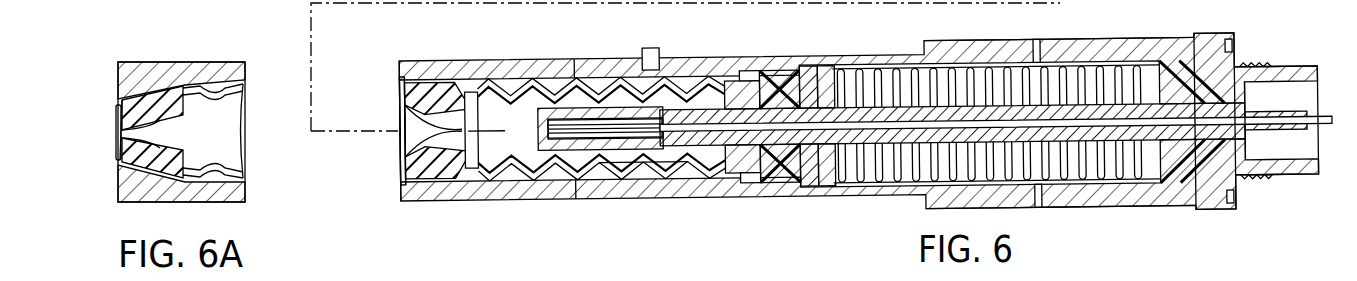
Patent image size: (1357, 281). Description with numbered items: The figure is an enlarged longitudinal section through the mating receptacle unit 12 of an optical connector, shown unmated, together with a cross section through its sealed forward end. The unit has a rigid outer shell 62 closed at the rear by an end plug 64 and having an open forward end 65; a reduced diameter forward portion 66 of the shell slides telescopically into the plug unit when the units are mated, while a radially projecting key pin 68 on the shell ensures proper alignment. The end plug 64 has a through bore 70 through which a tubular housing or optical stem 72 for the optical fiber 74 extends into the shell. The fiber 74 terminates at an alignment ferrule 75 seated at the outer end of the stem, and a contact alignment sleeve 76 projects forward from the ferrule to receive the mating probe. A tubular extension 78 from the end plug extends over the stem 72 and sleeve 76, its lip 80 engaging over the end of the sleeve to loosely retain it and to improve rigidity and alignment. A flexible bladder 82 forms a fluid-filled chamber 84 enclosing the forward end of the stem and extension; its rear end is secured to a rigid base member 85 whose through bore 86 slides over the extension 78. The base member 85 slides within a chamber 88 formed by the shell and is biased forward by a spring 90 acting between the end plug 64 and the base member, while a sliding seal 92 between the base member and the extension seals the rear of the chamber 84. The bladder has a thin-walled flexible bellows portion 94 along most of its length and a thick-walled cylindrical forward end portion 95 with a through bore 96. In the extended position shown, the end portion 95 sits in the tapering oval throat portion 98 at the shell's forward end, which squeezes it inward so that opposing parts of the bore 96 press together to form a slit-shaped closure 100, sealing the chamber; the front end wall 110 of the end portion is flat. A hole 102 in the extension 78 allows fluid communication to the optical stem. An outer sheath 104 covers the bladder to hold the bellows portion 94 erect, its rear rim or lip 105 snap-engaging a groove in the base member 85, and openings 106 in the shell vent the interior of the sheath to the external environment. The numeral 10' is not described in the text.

In FIG. 6A, the connector assembly 10' is at (181, 101).
In FIG. 6, the mating receptacle unit 12 is at (1112, 210).
In FIG. 6, the rigid outer shell 62 is at (1112, 54).
In FIG. 6, the rear end plug 64 is at (1207, 46).
In FIG. 6, the open forward end 65 is at (400, 63).
In FIG. 6A, the reduced diameter forward portion 66 is at (212, 68).
In FIG. 6, the reduced diameter forward portion 66 is at (842, 188).
In FIG. 6, the key pin 68 is at (661, 50).
In FIG. 6, the through bore 70 is at (1210, 102).
In FIG. 6, the tubular housing or optical stem 72 is at (1037, 137).
In FIG. 6, the optical fiber 74 is at (1322, 120).
In FIG. 6, the alignment ferrule 75 is at (612, 122).
In FIG. 6, the contact alignment sleeve 76 is at (569, 112).
In FIG. 6, the tubular extension 78 is at (897, 147).
In FIG. 6, the lip 80 is at (545, 113).
In FIG. 6A, the flexible bladder 82 is at (240, 100).
In FIG. 6, the flexible bladder 82 is at (536, 78).
In FIG. 6, the chamber 84 is at (530, 160).
In FIG. 6, the rigid base member 85 is at (795, 78).
In FIG. 6, the through bore 86 is at (772, 76).
In FIG. 6, the chamber 88 is at (957, 74).
In FIG. 6, the spring 90 is at (1062, 92).
In FIG. 6, the sliding seal 92 is at (826, 78).
In FIG. 6, the flexible bellows portion 94 is at (668, 172).
In FIG. 6A, the forward end portion 95 is at (163, 108).
In FIG. 6, the forward end portion 95 is at (452, 80).
In FIG. 6A, the through bore 96 is at (178, 134).
In FIG. 6, the through bore 96 is at (467, 120).
In FIG. 6A, the throat portion 98 is at (120, 133).
In FIG. 6, the throat portion 98 is at (410, 82).
In FIG. 6A, the slit-shaped closure 100 is at (119, 130).
In FIG. 6, the hole 102 is at (760, 176).
In FIG. 6, the outer sheath 104 is at (625, 176).
In FIG. 6, the inwardly projecting rim or lip 105 is at (768, 186).
In FIG. 6, the openings 106 is at (570, 58).
In FIG. 6, the front end wall 110 is at (398, 108).